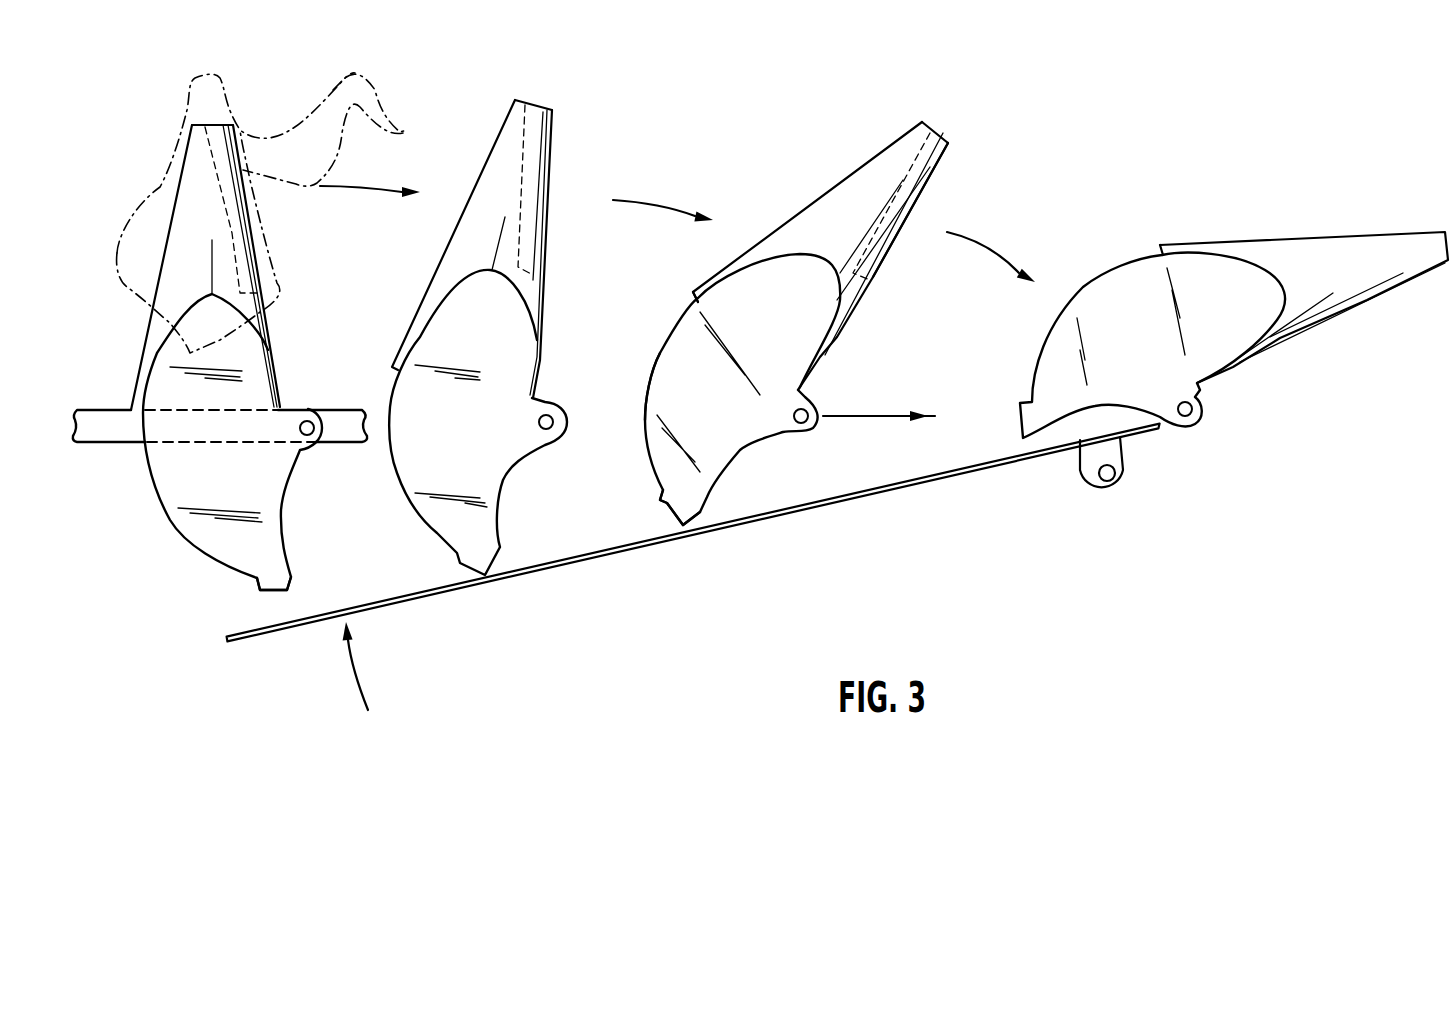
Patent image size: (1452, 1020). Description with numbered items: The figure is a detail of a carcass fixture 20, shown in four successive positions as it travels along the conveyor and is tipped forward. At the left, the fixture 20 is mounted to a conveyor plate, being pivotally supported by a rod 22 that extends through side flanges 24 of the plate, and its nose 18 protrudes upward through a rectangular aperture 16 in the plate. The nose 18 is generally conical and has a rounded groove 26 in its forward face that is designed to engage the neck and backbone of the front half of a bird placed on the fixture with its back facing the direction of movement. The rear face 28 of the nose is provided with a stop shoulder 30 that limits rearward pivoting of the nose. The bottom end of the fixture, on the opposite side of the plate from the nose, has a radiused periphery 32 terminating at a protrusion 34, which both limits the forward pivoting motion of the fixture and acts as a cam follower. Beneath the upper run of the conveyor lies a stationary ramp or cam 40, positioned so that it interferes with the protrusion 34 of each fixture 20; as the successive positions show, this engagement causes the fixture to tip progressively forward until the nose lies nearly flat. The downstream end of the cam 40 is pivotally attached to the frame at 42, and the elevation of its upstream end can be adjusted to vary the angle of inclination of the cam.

The rectangular aperture 16 is at (105, 409).
The nose 18 is at (552, 132).
The carcass fixture 20 is at (235, 484).
The rod 22 is at (315, 410).
The side flanges 24 is at (115, 428).
The rounded groove 26 is at (943, 168).
The rear face 28 is at (798, 212).
The stop shoulder 30 is at (693, 294).
The radiused periphery 32 is at (657, 357).
The protrusion 34 is at (293, 573).
The cam 40 is at (800, 513).
The pivotal attachment 42 is at (1120, 478).